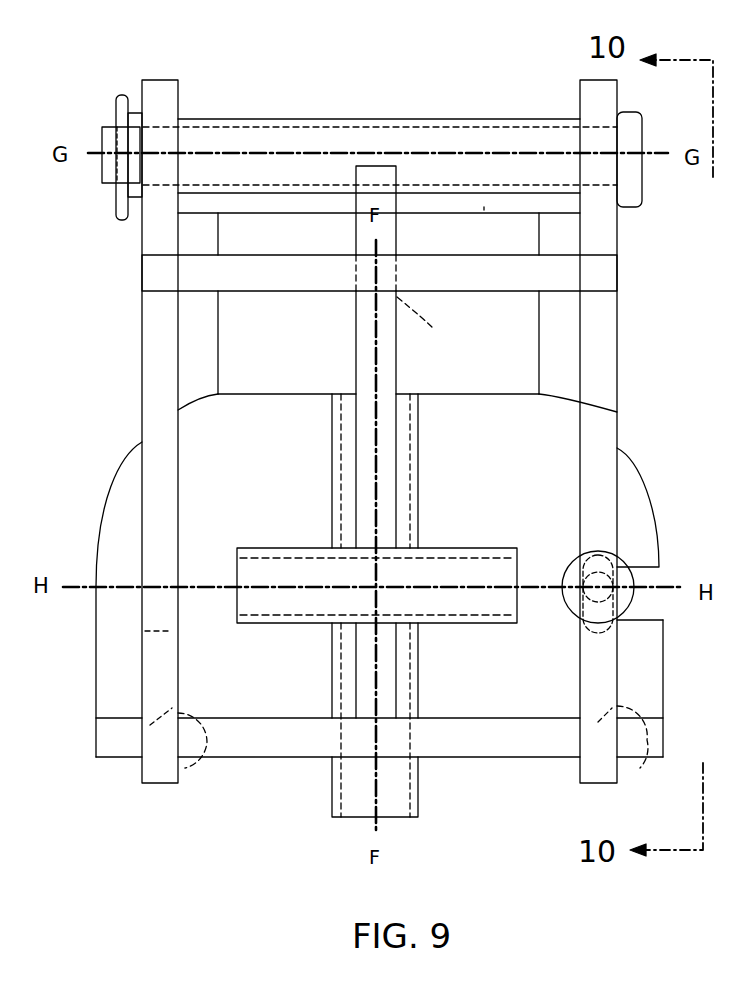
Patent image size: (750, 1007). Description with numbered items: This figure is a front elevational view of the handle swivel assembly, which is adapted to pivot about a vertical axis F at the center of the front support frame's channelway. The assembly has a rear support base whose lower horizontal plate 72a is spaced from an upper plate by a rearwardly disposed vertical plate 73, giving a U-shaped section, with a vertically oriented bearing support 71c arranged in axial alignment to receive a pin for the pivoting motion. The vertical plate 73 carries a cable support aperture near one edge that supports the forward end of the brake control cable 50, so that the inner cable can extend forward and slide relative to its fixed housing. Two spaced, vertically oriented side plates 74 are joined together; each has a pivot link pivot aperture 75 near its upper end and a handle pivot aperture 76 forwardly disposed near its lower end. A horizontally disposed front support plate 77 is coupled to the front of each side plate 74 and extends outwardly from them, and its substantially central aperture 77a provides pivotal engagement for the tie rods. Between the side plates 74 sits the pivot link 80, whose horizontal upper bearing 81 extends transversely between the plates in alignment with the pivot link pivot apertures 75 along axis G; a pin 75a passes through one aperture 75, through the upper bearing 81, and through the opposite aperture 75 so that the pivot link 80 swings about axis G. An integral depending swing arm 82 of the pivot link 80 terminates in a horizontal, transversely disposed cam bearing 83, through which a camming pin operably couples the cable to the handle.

The brake control cable 50 is at (630, 603).
The bearing support 71c is at (415, 700).
The lower horizontal plate 72a is at (255, 742).
The vertical plate 73 is at (636, 508).
The side plate 74 is at (145, 378).
The pivot link pivot aperture 75 is at (172, 132).
The pin 75a is at (112, 132).
The handle pivot aperture 76 is at (484, 207).
The front support plate 77 is at (582, 270).
The aperture 77a is at (436, 319).
The pivot link 80 is at (405, 348).
The upper bearing 81 is at (337, 118).
The swing arm 82 is at (362, 383).
The cam bearing 83 is at (460, 628).